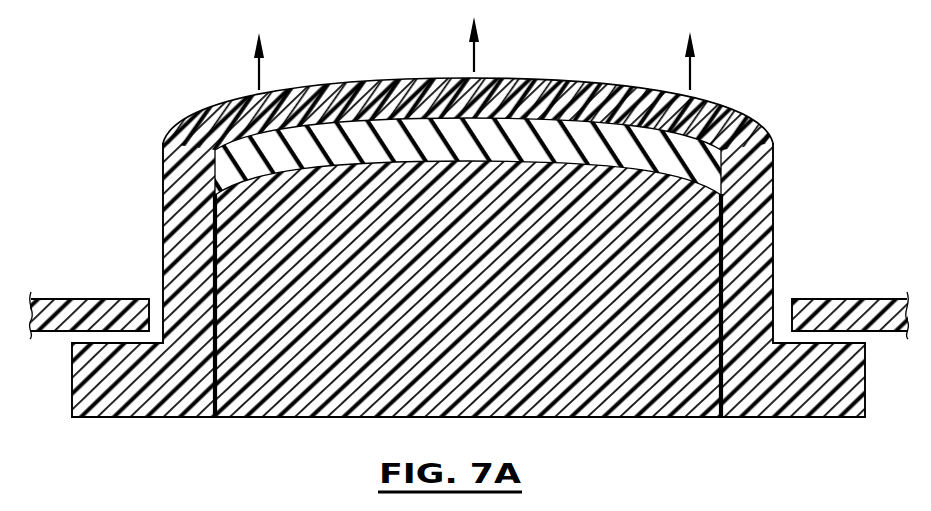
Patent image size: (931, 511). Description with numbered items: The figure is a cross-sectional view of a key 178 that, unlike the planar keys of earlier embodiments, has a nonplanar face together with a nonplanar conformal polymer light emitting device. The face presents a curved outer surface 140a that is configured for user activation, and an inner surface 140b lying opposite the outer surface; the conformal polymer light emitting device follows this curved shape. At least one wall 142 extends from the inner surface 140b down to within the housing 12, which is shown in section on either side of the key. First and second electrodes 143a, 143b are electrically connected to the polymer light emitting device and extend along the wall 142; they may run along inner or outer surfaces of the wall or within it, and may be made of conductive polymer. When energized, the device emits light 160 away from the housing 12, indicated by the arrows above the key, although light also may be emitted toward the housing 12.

The housing 12 is at (101, 329).
The outer surface 140a is at (348, 64).
The inner surface 140b is at (357, 146).
The wall 142 is at (192, 251).
The first electrode 143a is at (217, 311).
The second electrode 143b is at (722, 294).
The light 160 is at (477, 57).
The key 178 is at (805, 52).